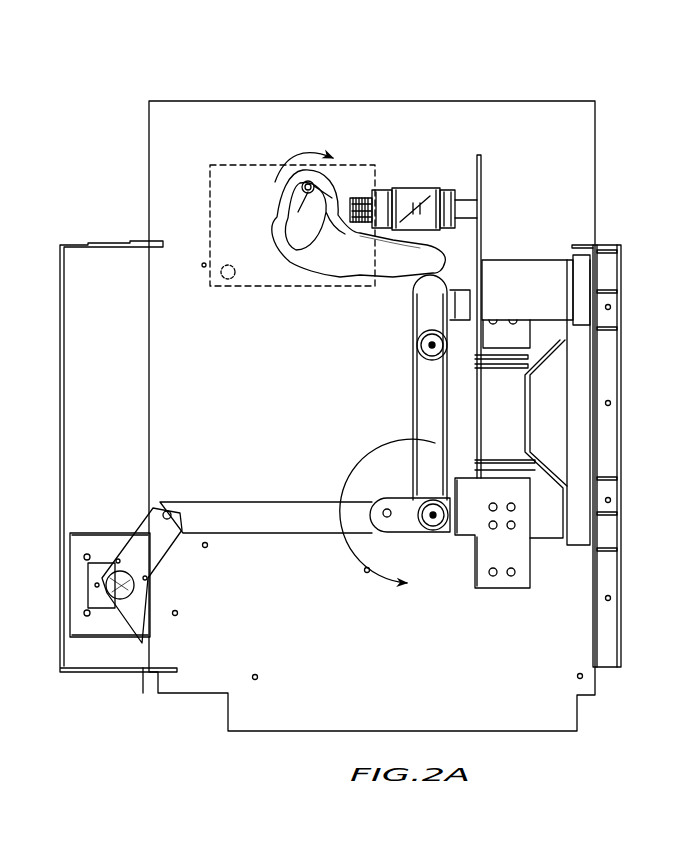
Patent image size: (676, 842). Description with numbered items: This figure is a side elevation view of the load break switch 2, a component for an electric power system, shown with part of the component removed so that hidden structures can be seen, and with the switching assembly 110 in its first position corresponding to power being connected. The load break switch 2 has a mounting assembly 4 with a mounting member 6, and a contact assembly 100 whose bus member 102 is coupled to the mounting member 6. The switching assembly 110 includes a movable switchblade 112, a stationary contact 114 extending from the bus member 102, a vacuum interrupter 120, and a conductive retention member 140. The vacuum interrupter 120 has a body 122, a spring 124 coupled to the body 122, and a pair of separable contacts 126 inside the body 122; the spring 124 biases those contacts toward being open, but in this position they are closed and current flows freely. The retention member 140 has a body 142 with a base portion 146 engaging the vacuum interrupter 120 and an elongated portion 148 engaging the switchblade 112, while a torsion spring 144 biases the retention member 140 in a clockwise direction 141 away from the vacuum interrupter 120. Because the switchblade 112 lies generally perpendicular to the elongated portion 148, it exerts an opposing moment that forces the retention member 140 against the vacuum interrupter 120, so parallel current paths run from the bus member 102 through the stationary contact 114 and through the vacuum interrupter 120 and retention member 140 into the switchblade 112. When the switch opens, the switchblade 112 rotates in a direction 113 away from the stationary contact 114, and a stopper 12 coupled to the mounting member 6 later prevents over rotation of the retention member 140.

The load break switch 2 is at (607, 110).
The mounting assembly 4 is at (207, 130).
The mounting member 6 is at (250, 287).
The stopper 12 is at (230, 283).
The contact assembly 100 is at (537, 118).
The bus member 102 is at (485, 178).
The switching assembly 110 is at (345, 140).
The switchblade 112 is at (425, 398).
The direction 113 is at (437, 438).
The stationary contact 114 is at (467, 288).
The vacuum interrupter 120 is at (440, 173).
The body 122 is at (373, 200).
The spring 124 is at (350, 198).
The pair of separable contacts 126 is at (447, 205).
The retention member 140 is at (307, 238).
The direction 141 is at (297, 153).
The body 142 is at (307, 248).
The torsion spring 144 is at (298, 205).
The base portion 146 is at (302, 188).
The elongated portion 148 is at (365, 262).